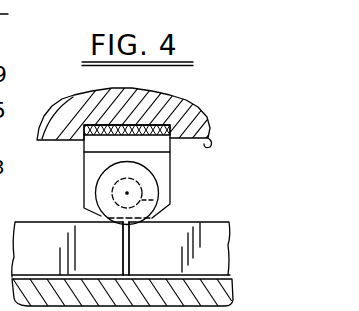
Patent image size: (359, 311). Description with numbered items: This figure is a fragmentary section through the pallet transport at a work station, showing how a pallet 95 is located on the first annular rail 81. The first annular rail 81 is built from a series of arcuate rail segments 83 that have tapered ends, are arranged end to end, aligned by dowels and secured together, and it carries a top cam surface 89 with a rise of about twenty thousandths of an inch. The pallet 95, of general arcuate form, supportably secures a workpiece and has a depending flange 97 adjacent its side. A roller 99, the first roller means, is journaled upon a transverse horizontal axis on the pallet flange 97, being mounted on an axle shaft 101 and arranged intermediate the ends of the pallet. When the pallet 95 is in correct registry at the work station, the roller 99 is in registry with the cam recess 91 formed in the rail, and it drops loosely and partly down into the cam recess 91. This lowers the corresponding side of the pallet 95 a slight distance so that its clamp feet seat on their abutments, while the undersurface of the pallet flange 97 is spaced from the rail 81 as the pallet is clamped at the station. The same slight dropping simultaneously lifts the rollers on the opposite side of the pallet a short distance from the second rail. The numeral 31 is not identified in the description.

The pallet 95 is at (176, 100).
The depending flange 97 is at (212, 146).
The roller 99 is at (146, 184).
The axle shaft 101 is at (170, 194).
The first annular rail 81 is at (229, 210).
The arcuate rail segment 83 is at (217, 253).
The top cam surface 89 is at (30, 222).
The cam recess 91 is at (115, 228).
The base 31 is at (326, 302).